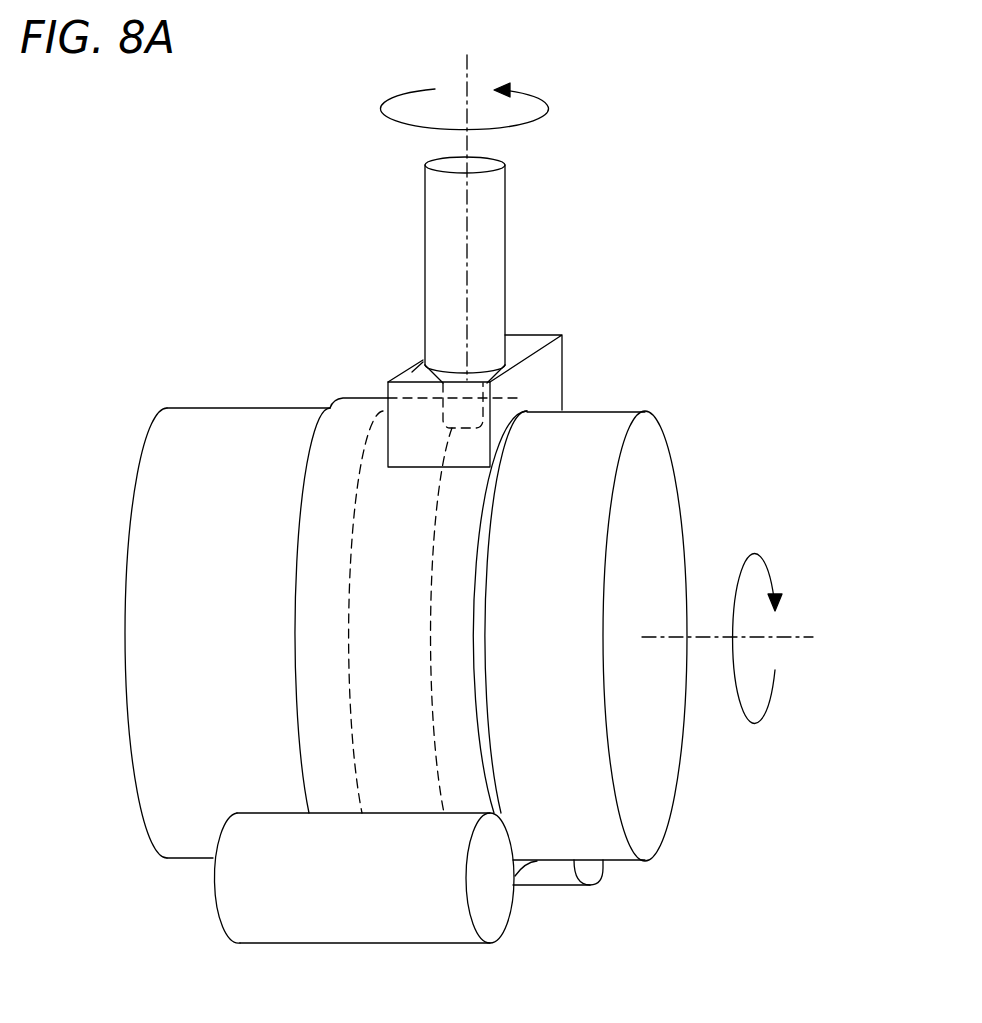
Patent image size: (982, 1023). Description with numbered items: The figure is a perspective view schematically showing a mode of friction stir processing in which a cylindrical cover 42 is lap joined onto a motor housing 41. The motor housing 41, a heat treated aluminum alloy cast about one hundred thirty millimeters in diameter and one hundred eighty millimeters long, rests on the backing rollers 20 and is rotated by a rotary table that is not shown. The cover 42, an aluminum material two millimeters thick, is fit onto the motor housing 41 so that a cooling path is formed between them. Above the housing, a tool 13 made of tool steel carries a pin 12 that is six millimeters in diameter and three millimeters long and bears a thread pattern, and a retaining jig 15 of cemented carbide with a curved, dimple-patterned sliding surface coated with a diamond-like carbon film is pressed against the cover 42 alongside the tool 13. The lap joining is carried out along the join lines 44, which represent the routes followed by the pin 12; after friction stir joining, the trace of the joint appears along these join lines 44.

The pin 12 is at (466, 397).
The tool 13 is at (490, 250).
The retaining jig 15 is at (416, 376).
The backing rollers 20 is at (355, 892).
The motor housing 41 is at (180, 525).
The cover 42 is at (317, 622).
The join lines 44 is at (430, 697).